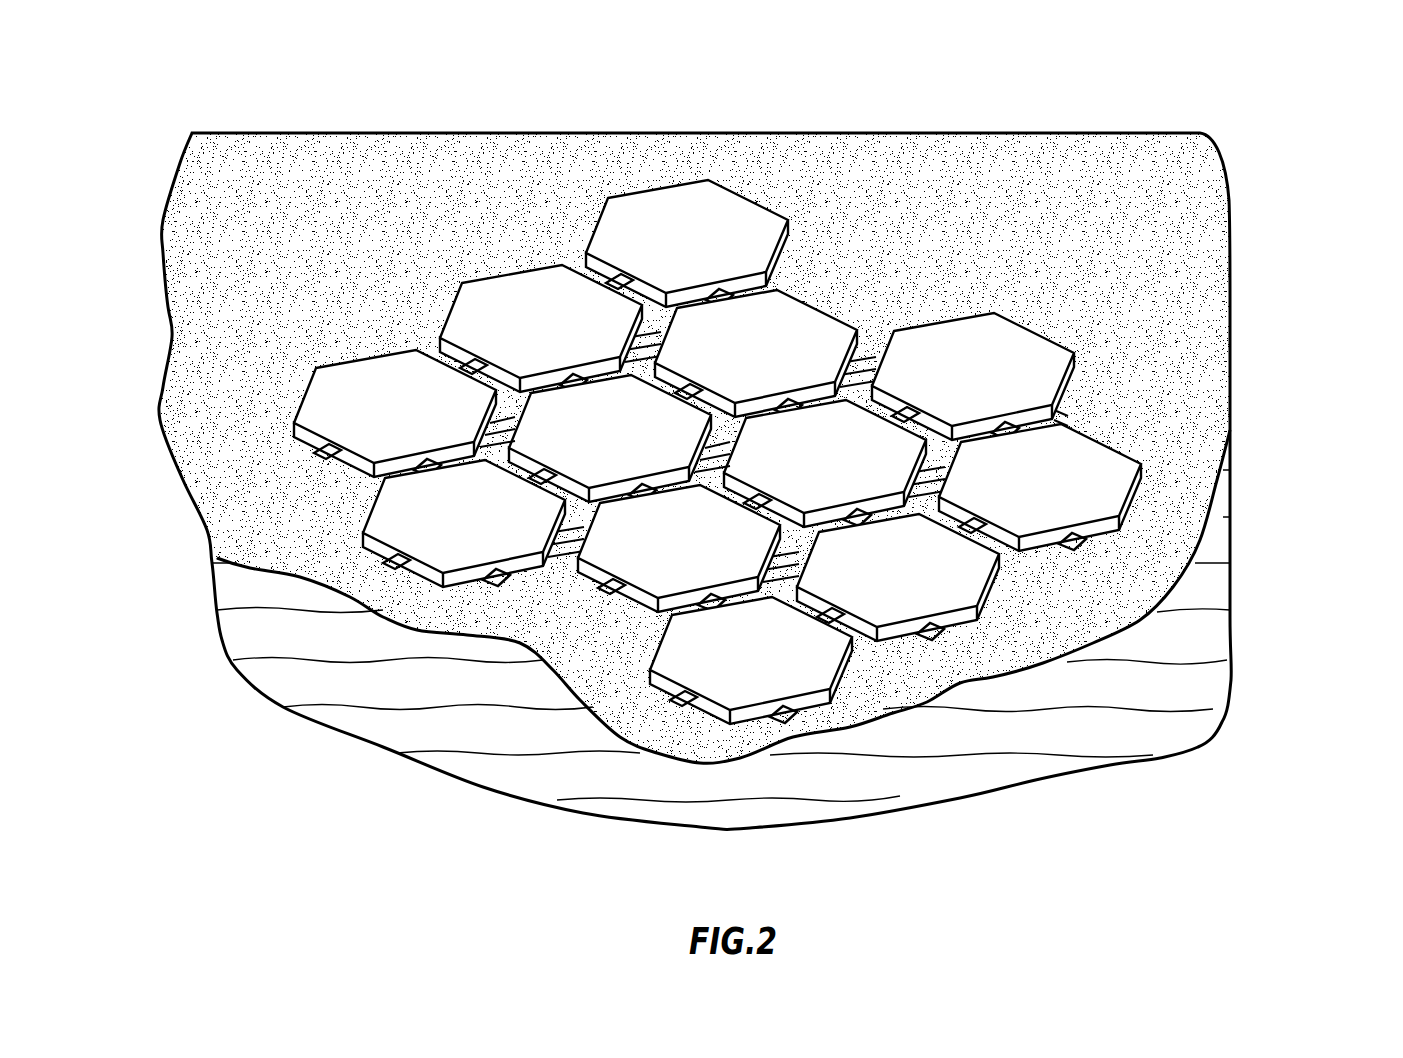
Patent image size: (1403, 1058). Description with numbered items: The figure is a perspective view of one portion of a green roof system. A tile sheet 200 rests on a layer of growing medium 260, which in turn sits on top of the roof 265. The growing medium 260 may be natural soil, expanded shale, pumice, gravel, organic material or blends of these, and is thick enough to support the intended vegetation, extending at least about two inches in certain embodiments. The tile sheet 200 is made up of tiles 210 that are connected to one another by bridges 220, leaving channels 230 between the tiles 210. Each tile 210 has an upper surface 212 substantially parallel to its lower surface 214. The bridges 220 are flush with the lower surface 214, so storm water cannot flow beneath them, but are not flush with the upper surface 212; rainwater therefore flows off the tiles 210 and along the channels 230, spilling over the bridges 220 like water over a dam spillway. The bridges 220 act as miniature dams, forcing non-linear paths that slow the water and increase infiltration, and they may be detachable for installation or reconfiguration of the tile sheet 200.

The tile sheet 200 is at (841, 258).
The tiles 210 is at (1130, 446).
The upper surface 212 is at (1020, 329).
The lower surface 214 is at (1068, 414).
The bridges 220 is at (895, 345).
The channels 230 is at (512, 451).
The growing medium 260 is at (1185, 270).
The roof 265 is at (1187, 637).